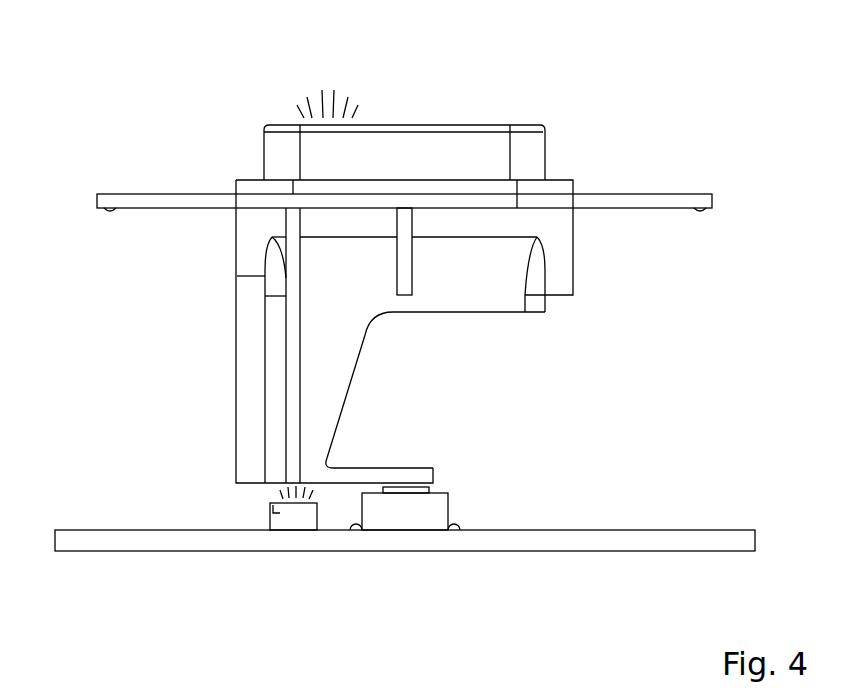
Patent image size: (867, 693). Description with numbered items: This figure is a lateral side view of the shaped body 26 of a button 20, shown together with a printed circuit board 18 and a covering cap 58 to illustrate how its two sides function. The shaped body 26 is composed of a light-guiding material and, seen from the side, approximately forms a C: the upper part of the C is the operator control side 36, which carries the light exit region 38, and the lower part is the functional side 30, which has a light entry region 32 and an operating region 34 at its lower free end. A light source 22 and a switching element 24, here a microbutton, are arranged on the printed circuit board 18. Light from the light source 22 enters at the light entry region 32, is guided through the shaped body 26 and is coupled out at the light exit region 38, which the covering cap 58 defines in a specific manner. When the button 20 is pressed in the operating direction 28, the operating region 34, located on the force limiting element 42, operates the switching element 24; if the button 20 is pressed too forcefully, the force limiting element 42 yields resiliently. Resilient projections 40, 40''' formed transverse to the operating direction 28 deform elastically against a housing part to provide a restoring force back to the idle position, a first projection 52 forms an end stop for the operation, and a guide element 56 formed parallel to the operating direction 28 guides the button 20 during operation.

The printed circuit board 18 is at (68, 540).
The button 20 is at (99, 147).
The light source 22 is at (293, 512).
The switching element 24 is at (403, 512).
The shaped body 26 is at (248, 380).
The operating direction 28 is at (718, 450).
The functional side 30 is at (552, 467).
The light entry region 32 is at (249, 513).
The operating region 34 is at (446, 499).
The operator control side 36 is at (724, 166).
The light exit region 38 is at (378, 81).
The resilient projection 40 is at (166, 140).
The resilient projection 40''' is at (642, 148).
The force limiting element 42 is at (407, 473).
The first projection 52 is at (405, 281).
The guide element 56 is at (275, 340).
The covering cap 58 is at (483, 143).